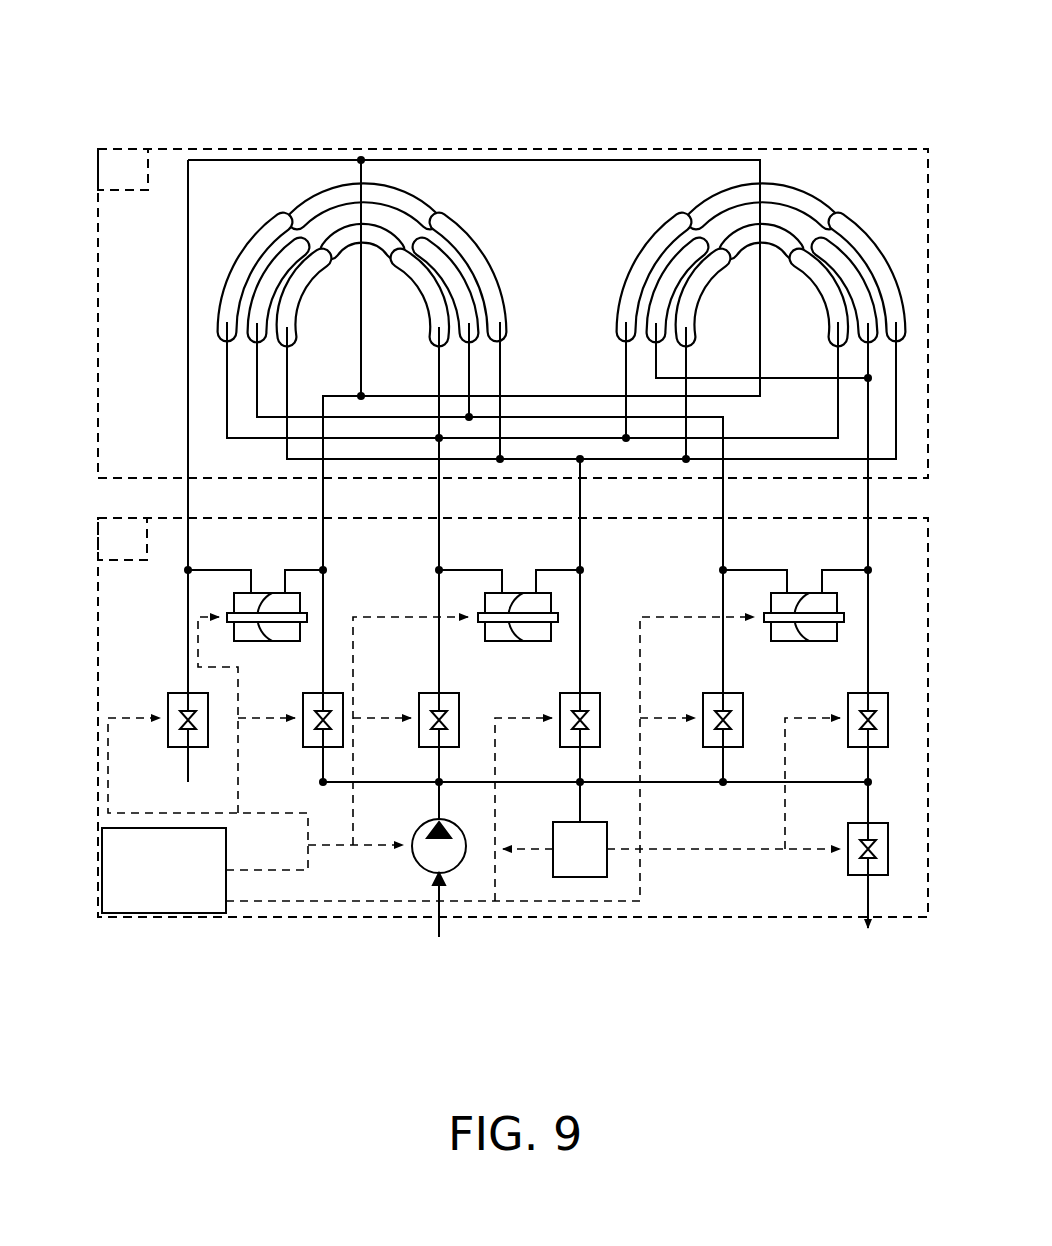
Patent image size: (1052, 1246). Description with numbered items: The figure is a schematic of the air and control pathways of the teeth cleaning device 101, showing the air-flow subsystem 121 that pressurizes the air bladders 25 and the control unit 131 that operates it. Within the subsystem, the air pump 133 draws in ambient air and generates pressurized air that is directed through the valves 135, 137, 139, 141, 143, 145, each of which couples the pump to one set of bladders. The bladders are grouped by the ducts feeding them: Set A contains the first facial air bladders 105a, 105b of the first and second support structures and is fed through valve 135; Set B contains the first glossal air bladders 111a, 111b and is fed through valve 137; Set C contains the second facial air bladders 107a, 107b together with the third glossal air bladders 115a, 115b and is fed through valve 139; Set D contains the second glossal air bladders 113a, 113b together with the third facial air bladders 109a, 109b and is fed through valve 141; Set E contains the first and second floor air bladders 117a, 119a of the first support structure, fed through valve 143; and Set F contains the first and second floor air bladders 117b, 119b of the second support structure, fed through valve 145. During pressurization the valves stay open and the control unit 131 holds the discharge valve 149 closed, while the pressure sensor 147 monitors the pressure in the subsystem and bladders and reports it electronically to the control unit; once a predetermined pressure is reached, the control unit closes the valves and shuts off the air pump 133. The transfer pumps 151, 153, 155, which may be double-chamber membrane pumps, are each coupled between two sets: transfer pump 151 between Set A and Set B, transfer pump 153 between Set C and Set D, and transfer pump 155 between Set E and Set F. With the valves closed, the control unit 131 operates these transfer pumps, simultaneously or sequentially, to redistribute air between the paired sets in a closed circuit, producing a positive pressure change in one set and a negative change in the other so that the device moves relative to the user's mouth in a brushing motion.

The teeth cleaning device 101 is at (90, 114).
The air bladders 25 is at (513, 313).
The first facial air bladder of the first support structure 105a is at (348, 200).
The first facial air bladder of the second support structure 105b is at (747, 200).
The second facial air bladder of the first support structure 107a is at (268, 240).
The second facial air bladder of the second support structure 107b is at (667, 240).
The third facial air bladder of the first support structure 109a is at (478, 265).
The third facial air bladder of the second support structure 109b is at (877, 265).
The first glossal air bladder of the first support structure 111a is at (375, 233).
The first glossal air bladder of the second support structure 111b is at (774, 233).
The second glossal air bladder of the first support structure 113a is at (307, 267).
The second glossal air bladder of the second support structure 113b is at (706, 267).
The third glossal air bladder of the first support structure 115a is at (405, 262).
The third glossal air bladder of the second support structure 115b is at (804, 262).
The first floor air bladder of the first support structure 117a is at (263, 298).
The first floor air bladder of the second support structure 117b is at (662, 298).
The second floor air bladder of the first support structure 119a is at (433, 252).
The second floor air bladder of the second support structure 119b is at (832, 252).
The air-flow subsystem 121 is at (513, 717).
The control unit 131 is at (160, 913).
The air pump 133 is at (420, 864).
The valve 135 is at (168, 706).
The valve 137 is at (343, 706).
The valve 139 is at (459, 706).
The valve 141 is at (600, 706).
The valve 143 is at (743, 706).
The valve 145 is at (888, 706).
The pressure sensor 147 is at (578, 877).
The discharge valve 149 is at (888, 830).
The transfer pump 151 is at (300, 606).
The transfer pump 153 is at (551, 606).
The transfer pump 155 is at (837, 606).